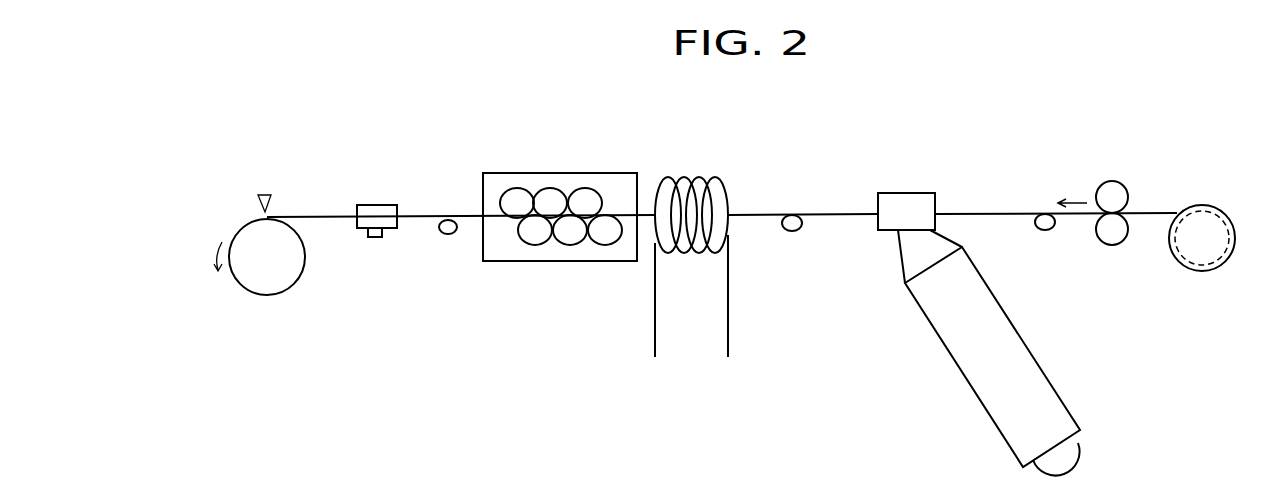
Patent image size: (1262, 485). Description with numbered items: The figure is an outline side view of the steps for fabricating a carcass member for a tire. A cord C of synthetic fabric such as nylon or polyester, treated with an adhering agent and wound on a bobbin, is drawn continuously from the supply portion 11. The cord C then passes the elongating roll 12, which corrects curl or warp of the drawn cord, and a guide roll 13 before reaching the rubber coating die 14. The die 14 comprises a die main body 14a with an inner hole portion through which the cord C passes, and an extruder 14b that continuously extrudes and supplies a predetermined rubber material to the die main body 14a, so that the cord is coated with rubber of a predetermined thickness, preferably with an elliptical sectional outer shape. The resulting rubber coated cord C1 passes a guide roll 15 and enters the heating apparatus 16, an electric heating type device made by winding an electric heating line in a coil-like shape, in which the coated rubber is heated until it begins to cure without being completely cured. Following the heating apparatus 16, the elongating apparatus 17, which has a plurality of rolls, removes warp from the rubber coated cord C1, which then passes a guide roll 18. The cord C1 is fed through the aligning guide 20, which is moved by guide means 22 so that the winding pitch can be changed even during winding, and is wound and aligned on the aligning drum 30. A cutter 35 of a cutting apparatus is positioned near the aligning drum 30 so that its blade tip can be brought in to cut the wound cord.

The supply portion 11 is at (1208, 191).
The elongating roll 12 is at (1115, 171).
The guide roll 13 is at (1045, 230).
The rubber coating die 14 is at (912, 184).
The die main body 14a is at (887, 224).
The extruder 14b is at (1027, 375).
The guide roll 15 is at (792, 232).
The heating apparatus 16 is at (696, 165).
The elongating apparatus 17 is at (579, 168).
The guide roll 18 is at (449, 234).
The aligning guide 20 is at (377, 205).
The guide means 22 is at (373, 238).
The aligning drum 30 is at (253, 282).
The cutter 35 is at (256, 199).
The cord C is at (995, 212).
The rubber coated cord C1 is at (422, 215).